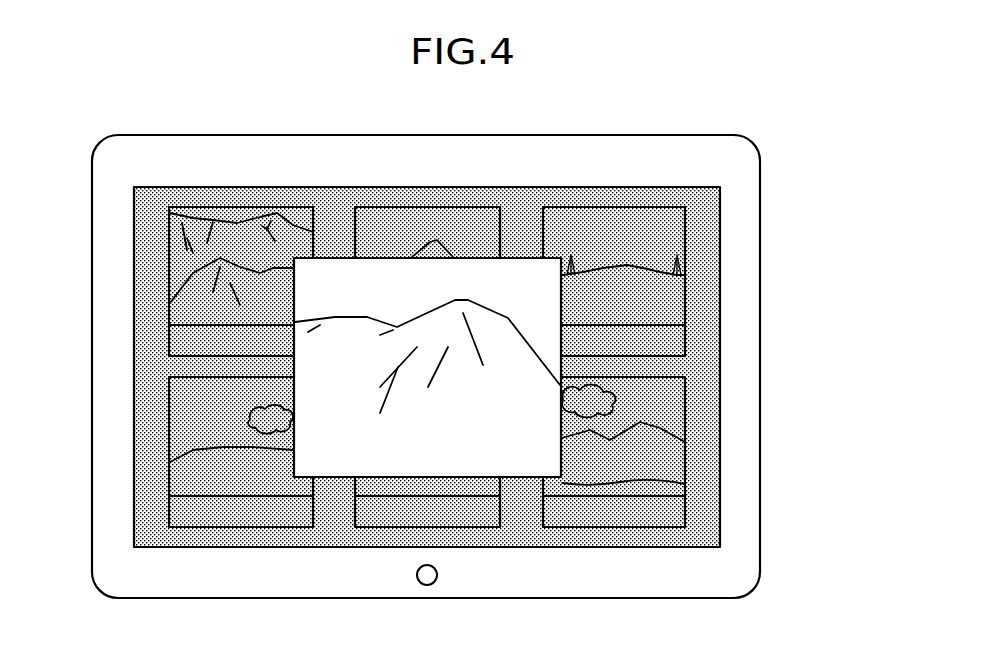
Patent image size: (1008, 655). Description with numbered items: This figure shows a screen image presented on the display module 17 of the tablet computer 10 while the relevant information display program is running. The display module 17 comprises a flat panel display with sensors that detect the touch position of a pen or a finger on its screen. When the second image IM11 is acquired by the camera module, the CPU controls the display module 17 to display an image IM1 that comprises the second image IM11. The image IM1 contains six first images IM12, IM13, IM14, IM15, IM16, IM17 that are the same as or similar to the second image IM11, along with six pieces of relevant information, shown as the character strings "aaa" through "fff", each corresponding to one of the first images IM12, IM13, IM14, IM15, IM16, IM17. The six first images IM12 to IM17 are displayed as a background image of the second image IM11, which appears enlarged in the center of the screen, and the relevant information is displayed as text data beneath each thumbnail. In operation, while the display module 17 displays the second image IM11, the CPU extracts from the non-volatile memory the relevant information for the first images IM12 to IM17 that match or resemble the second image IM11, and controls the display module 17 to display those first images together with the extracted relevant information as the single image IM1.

The tablet computer 10 is at (695, 134).
The display module 17 is at (548, 195).
The image IM1 is at (722, 366).
The second image IM11 is at (377, 256).
The first image IM12 is at (277, 205).
The first image IM13 is at (274, 498).
The first image IM14 is at (457, 205).
The first image IM15 is at (468, 498).
The first image IM16 is at (637, 205).
The first image IM17 is at (645, 498).